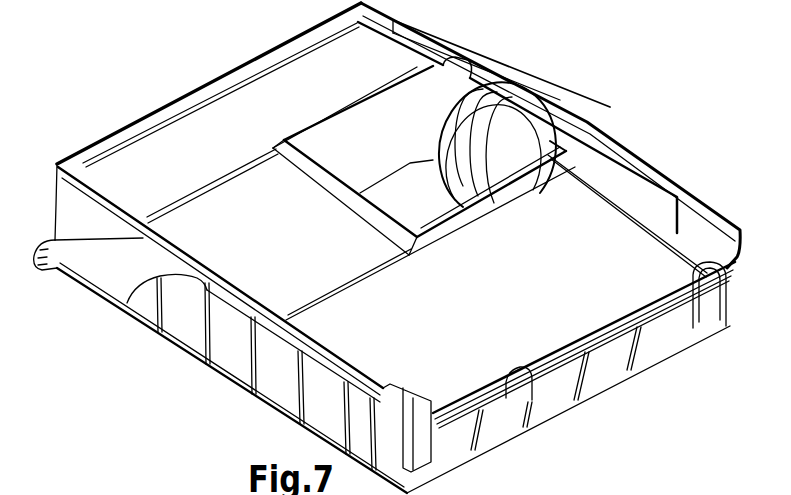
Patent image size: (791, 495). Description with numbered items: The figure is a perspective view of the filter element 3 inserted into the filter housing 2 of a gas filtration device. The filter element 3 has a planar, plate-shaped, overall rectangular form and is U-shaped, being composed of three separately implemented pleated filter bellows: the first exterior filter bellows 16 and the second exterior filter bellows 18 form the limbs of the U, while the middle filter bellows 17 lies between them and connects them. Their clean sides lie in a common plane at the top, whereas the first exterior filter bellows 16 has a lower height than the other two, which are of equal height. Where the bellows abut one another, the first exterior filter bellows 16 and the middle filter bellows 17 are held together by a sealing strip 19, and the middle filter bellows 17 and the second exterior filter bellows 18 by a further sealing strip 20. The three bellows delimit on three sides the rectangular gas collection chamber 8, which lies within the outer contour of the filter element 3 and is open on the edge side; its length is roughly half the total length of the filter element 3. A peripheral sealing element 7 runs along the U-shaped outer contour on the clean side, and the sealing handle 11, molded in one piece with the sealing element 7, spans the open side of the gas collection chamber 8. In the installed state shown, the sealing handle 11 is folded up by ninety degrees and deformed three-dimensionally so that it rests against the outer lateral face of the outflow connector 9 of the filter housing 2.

The filter housing 2 is at (501, 418).
The filter element 3 is at (583, 312).
The sealing element 7 is at (480, 214).
The gas collection chamber 8 is at (418, 210).
The outflow connector 9 is at (525, 61).
The sealing handle 11 is at (533, 117).
The first exterior filter bellows 16 is at (269, 130).
The middle filter bellows 17 is at (284, 262).
The second exterior filter bellows 18 is at (497, 335).
The sealing strip 19 is at (209, 183).
The sealing strip 20 is at (343, 290).